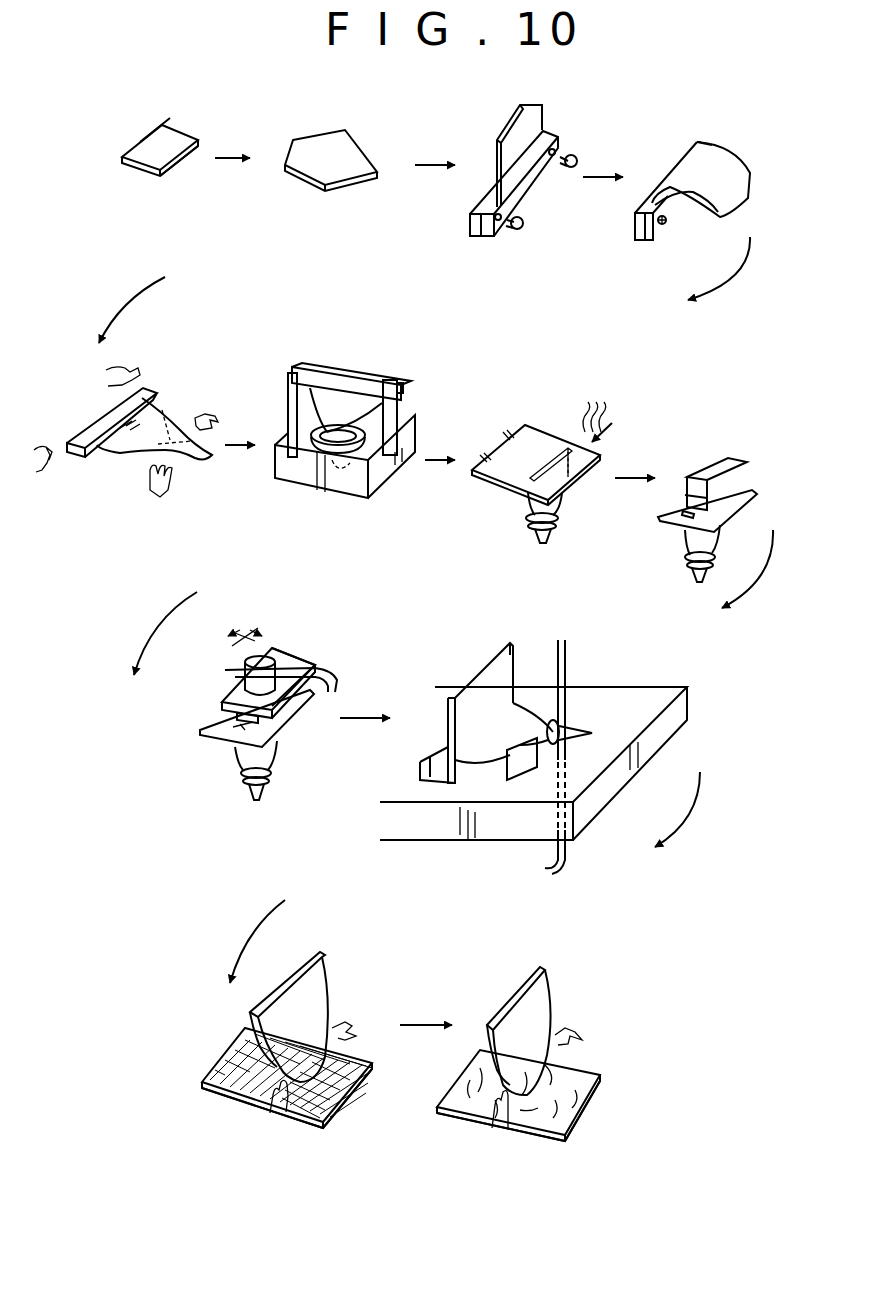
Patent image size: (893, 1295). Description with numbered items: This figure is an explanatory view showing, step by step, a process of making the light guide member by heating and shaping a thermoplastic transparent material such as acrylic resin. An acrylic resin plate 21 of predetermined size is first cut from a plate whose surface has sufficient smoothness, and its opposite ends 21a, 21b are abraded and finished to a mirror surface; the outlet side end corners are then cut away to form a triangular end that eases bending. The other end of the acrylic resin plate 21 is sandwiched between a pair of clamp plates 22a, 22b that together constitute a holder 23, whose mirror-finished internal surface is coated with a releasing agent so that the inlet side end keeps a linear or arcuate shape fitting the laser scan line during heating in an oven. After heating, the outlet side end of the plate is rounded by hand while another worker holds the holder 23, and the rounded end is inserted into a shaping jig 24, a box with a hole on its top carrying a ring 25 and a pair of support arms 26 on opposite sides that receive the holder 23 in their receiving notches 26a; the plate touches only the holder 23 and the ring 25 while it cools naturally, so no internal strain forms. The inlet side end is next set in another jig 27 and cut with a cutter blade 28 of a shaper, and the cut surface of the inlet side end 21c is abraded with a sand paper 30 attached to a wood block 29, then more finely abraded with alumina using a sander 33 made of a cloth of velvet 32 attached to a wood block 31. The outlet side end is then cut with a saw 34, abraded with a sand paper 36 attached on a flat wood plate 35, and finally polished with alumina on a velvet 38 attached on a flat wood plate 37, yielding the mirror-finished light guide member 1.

The lens 1 is at (315, 988).
The acrylic resin plate 21 is at (144, 146).
The end of acrylic resin plate 21a is at (185, 160).
The end of acrylic resin plate 21b is at (152, 131).
The inlet side end 21c is at (688, 517).
The clamp plate 22a is at (476, 208).
The clamp plate 22b is at (518, 198).
The holder 23 is at (482, 242).
The shaping jig 24 is at (339, 500).
The ring 25 is at (313, 433).
The support arm 26 is at (397, 410).
The receiving notch 26a is at (403, 388).
The jig 27 is at (505, 473).
The cutter blade 28 is at (606, 413).
The wood block 29 is at (727, 460).
The sand paper 30 is at (745, 484).
The wood block 31 is at (223, 717).
The velvet 32 is at (212, 731).
The sander 33 is at (303, 651).
The saw 34 is at (567, 658).
The flat wood plate 35 is at (240, 1100).
The sand paper 36 is at (233, 1082).
The flat wood plate 37 is at (462, 1113).
The velvet 38 is at (450, 1093).